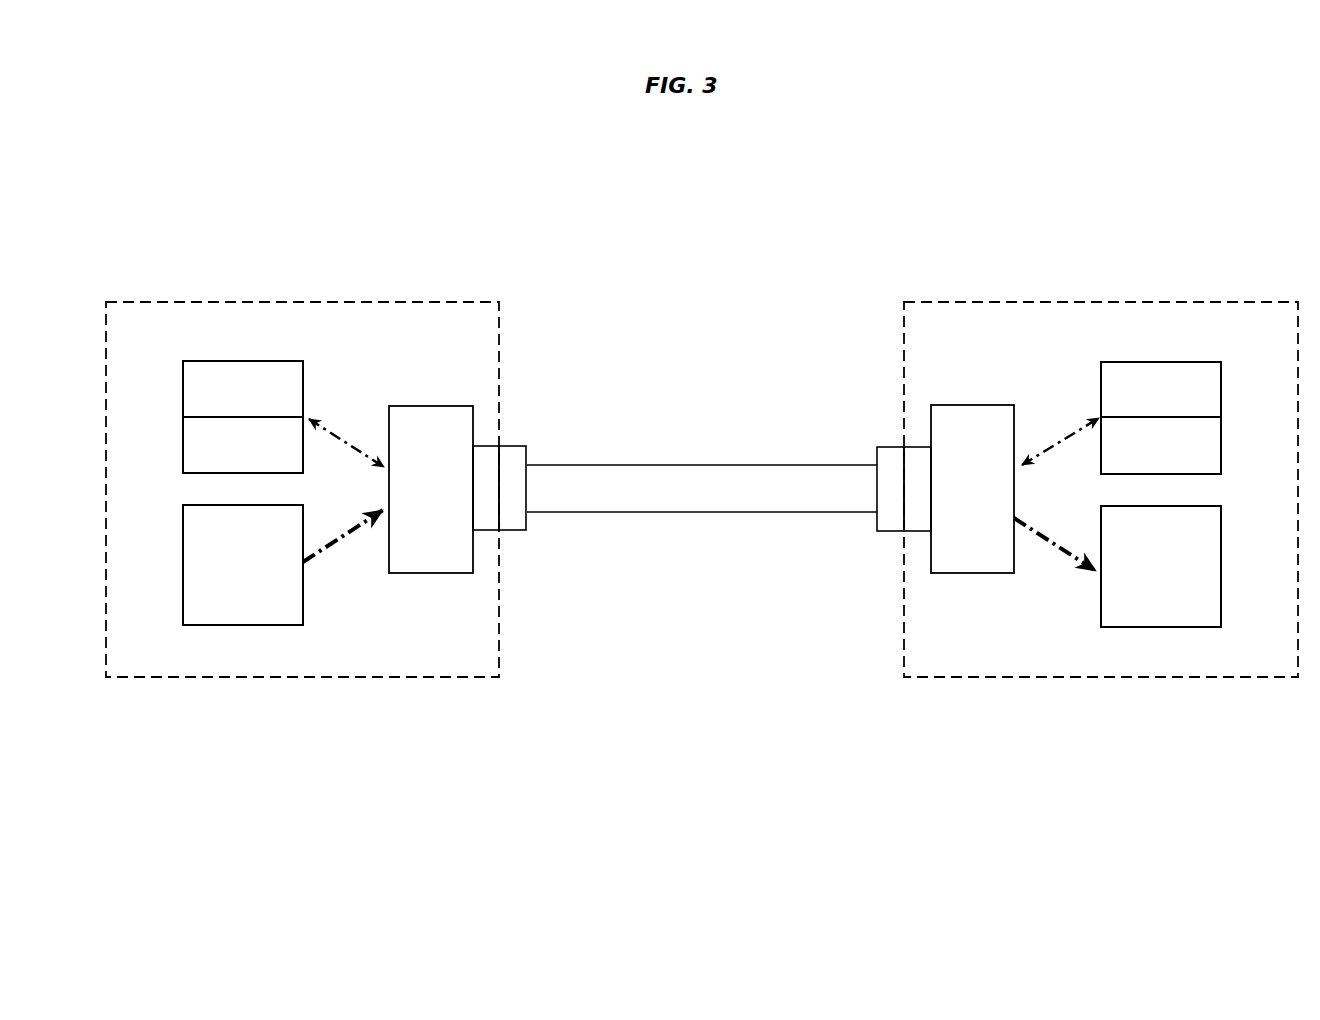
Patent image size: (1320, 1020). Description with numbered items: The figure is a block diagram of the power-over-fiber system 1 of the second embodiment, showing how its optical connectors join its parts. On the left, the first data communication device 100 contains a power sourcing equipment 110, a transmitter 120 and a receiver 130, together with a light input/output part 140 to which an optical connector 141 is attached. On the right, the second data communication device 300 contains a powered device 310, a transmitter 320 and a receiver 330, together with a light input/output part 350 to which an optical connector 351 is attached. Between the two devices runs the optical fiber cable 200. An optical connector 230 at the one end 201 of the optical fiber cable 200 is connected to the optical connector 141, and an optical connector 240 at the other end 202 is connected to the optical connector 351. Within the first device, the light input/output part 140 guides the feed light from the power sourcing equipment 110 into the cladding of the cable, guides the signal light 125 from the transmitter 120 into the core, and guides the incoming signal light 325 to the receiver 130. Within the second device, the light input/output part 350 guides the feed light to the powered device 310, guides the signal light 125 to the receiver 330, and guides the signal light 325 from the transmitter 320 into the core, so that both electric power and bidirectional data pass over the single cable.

The power-over-fiber system 1 is at (783, 238).
The first data communication device 100 is at (346, 302).
The power sourcing equipment 110 is at (183, 537).
The transmitter 120 is at (183, 391).
The signal light 125 is at (330, 428).
The receiver 130 is at (183, 450).
The light input/output part 140 is at (433, 406).
The optical connector 141 is at (485, 523).
The optical fiber cable 200 is at (707, 452).
The one end 201 is at (530, 523).
The other end 202 is at (873, 523).
The optical connector 230 is at (512, 523).
The optical connector 240 is at (890, 523).
The second data communication device 300 is at (1029, 300).
The powered device 310 is at (1221, 537).
The transmitter 320 is at (1221, 447).
The signal light 325 is at (1070, 430).
The receiver 330 is at (1221, 390).
The light input/output part 350 is at (972, 405).
The optical connector 351 is at (917, 523).